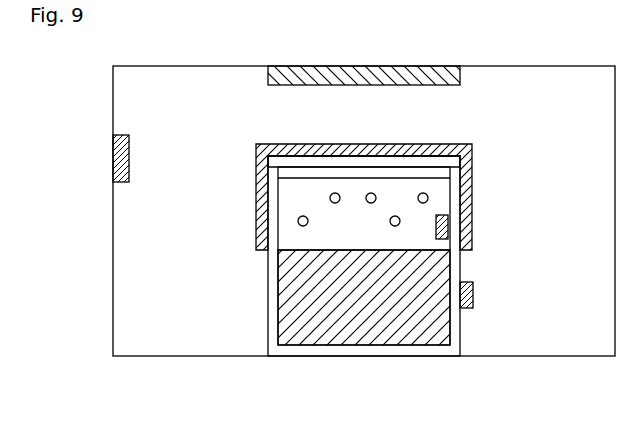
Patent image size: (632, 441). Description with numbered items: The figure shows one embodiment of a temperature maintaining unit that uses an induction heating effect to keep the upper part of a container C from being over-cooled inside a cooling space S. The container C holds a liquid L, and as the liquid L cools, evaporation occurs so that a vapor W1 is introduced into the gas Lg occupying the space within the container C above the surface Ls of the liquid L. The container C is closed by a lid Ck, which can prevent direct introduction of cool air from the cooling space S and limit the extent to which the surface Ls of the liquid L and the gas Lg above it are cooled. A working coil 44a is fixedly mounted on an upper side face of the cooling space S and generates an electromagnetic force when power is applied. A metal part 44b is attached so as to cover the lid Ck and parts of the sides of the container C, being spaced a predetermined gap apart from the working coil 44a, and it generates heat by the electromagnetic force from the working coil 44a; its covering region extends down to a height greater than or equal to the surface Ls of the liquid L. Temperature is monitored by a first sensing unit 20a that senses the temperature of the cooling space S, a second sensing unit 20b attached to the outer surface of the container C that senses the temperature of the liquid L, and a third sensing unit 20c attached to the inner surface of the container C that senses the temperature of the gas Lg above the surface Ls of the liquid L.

The cooling space S is at (364, 211).
The working coil 44a is at (462, 73).
The metal part 44b is at (472, 149).
The first sensing unit 20a is at (113, 155).
The second sensing unit 20b is at (473, 295).
The third sensing unit 20c is at (449, 225).
The container C is at (458, 318).
The lid Ck is at (448, 152).
The vapor W1 is at (395, 216).
The gas Lg is at (364, 205).
The surface Ls is at (303, 250).
The liquid L is at (327, 318).